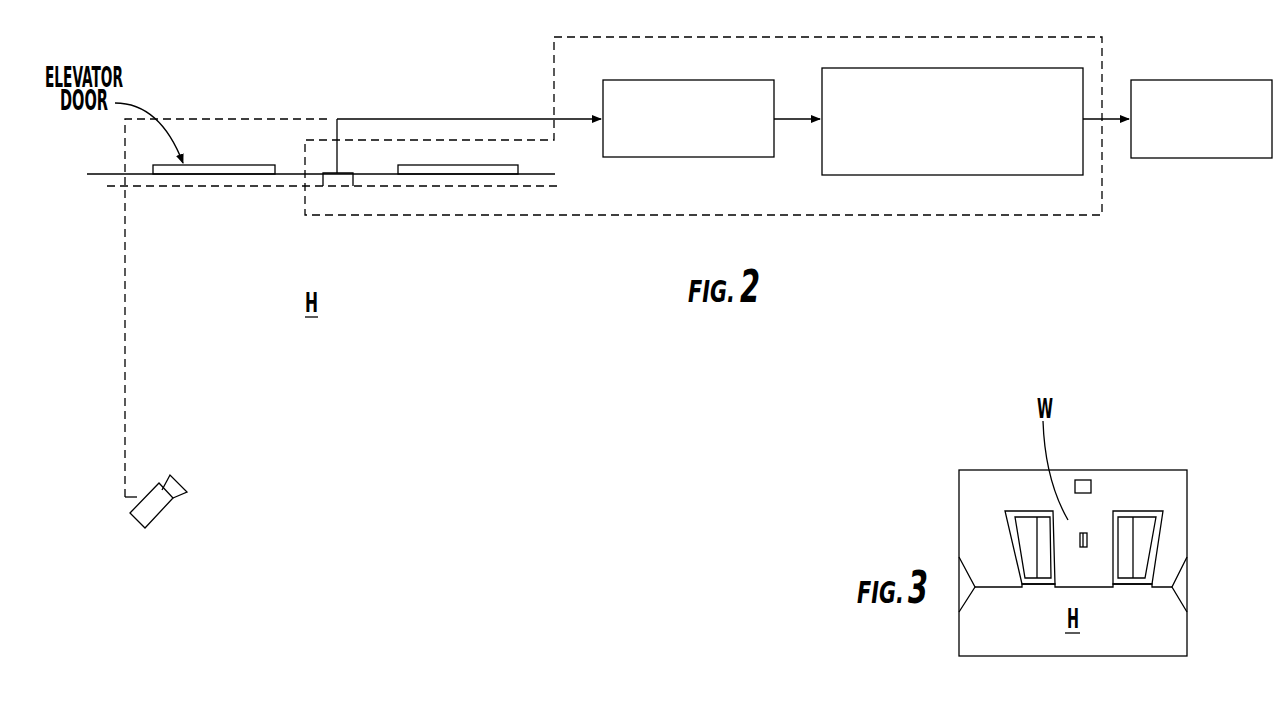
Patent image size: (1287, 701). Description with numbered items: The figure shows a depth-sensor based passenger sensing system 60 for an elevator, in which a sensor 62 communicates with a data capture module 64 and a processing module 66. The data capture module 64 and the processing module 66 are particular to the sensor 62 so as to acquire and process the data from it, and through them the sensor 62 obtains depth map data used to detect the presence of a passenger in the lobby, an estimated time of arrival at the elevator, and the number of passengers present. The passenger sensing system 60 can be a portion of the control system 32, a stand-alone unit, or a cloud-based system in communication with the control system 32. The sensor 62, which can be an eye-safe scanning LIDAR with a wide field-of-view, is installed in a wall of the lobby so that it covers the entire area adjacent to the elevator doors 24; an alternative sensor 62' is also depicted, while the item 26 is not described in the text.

In FIG. 2, the elevator doors 24 is at (197, 175).
In FIG. 3, the elevator doors 24 is at (1030, 523).
In FIG. 3, the passenger / object in hallway 26 is at (1083, 533).
In FIG. 2, the control system 32 is at (1214, 78).
In FIG. 2, the depth-sensor based passenger sensing system 60 is at (918, 35).
In FIG. 2, the sensor 62 is at (306, 173).
In FIG. 3, the sensor 62 is at (1102, 436).
In FIG. 2, the alternate sensor (camera) 62' is at (171, 514).
In FIG. 2, the data capture module 64 is at (731, 80).
In FIG. 2, the processing module 66 is at (1013, 68).